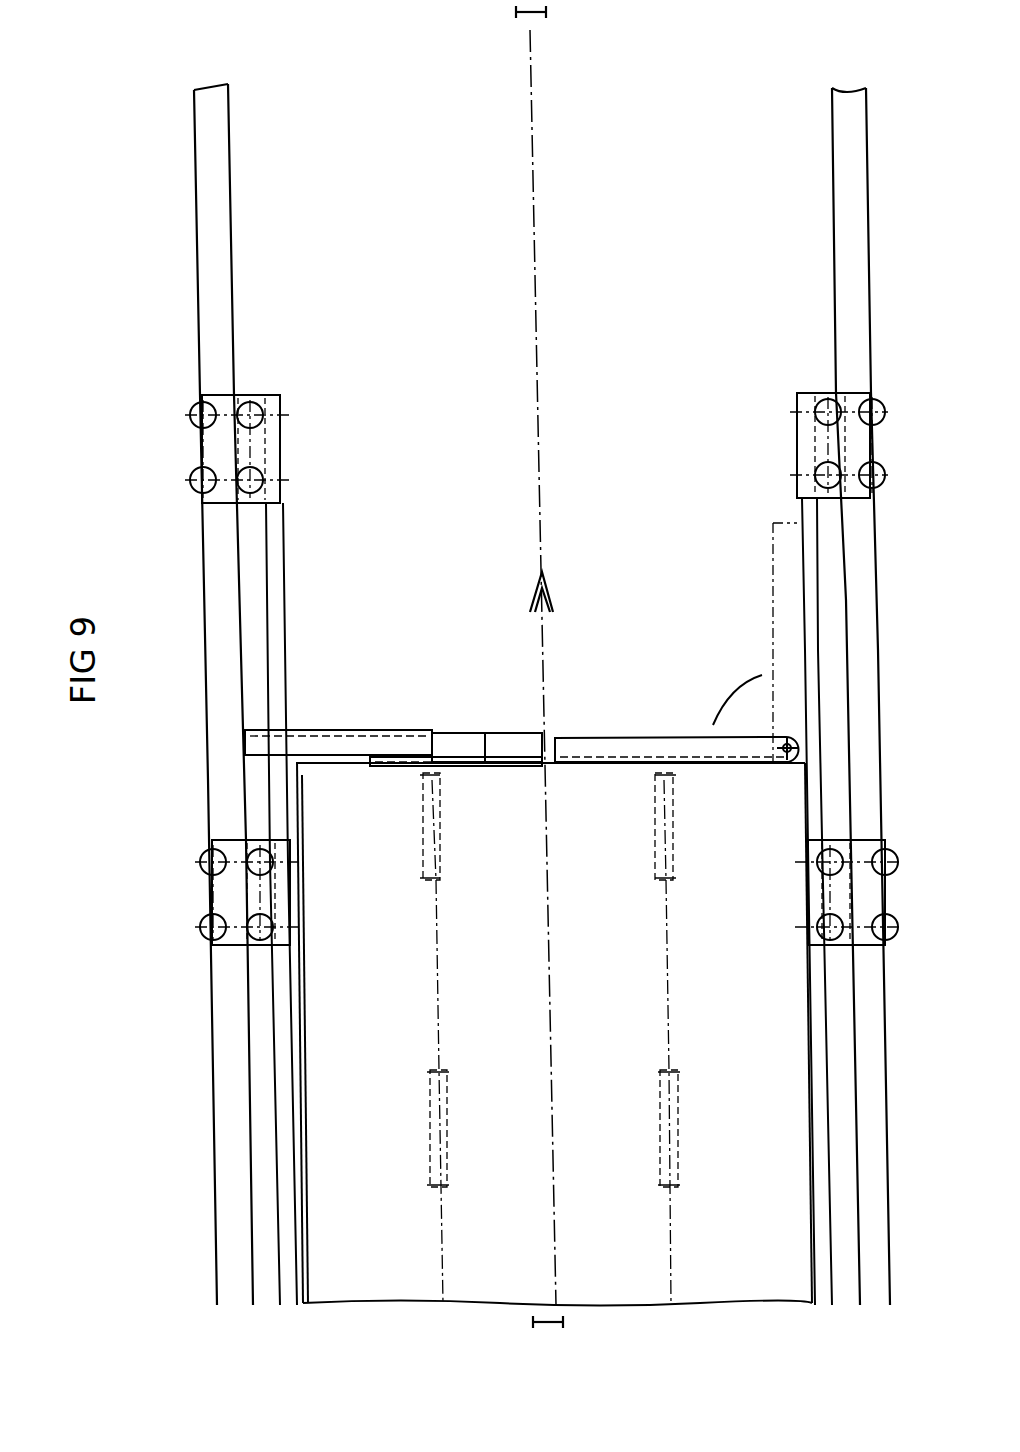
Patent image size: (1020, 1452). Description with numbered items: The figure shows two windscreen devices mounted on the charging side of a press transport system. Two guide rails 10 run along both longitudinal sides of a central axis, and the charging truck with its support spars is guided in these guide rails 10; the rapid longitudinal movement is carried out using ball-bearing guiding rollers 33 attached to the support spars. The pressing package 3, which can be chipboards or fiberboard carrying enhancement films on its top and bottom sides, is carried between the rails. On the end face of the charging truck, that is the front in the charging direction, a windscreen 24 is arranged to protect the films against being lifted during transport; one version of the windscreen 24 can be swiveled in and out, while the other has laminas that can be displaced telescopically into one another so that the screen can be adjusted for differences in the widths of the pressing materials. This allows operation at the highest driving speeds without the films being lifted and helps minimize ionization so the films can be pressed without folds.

The pressing package 3 is at (554, 1034).
The guide rails 10 is at (546, 694).
The windscreen 24 is at (676, 712).
The ball-bearing guiding rollers 33 is at (836, 381).